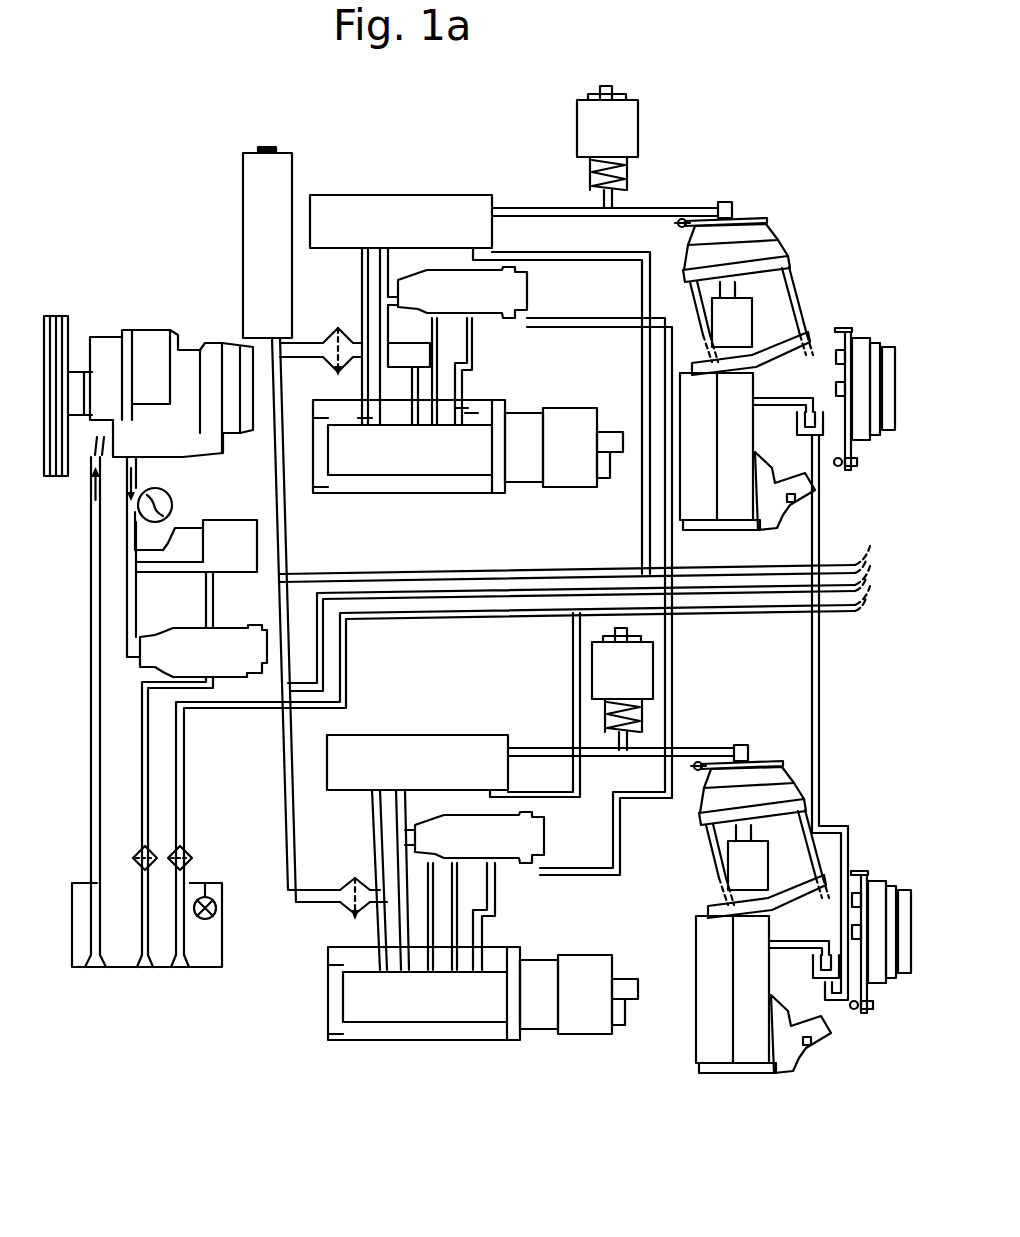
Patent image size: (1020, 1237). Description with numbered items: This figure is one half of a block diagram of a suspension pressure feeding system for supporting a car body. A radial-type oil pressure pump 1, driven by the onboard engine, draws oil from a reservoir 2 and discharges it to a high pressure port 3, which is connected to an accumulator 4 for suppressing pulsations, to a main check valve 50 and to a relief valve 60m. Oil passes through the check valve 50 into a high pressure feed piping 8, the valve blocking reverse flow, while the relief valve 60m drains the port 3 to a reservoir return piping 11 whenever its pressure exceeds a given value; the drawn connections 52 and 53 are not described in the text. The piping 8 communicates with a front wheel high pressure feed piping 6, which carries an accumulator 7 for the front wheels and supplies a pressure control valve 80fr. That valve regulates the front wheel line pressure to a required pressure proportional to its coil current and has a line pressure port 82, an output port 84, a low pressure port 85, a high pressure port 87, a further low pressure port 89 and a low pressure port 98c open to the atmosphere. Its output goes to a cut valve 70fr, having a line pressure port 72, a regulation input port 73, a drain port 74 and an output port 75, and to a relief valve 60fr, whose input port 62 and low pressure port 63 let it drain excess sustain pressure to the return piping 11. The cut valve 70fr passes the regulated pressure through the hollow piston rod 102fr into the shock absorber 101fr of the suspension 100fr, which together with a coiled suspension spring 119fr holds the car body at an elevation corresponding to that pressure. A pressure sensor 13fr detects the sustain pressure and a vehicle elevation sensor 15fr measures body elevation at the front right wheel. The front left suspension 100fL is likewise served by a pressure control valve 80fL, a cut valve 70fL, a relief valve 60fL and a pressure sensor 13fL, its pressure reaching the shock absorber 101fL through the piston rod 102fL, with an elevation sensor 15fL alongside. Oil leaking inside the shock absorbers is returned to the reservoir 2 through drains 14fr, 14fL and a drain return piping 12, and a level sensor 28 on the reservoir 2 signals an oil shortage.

The oil pressure pump 1 is at (154, 325).
The reservoir 2 is at (96, 975).
The high pressure port 3 is at (140, 474).
The accumulator 4 is at (172, 503).
The front wheel high pressure feed piping 6 is at (287, 522).
The accumulator for the front wheels 7 is at (243, 187).
The high pressure feed piping 8 is at (399, 572).
The reservoir return piping 11 is at (603, 590).
The drain return piping 12 is at (554, 628).
The pressure sensor 13fr is at (640, 112).
The pressure sensor 13fL is at (582, 689).
The drain 14fr is at (797, 420).
The drain 14fL is at (804, 973).
The vehicle elevation sensor 15fr is at (875, 331).
The vehicle elevation sensor 15fL is at (887, 965).
The level sensor 28 is at (206, 880).
The main check valve 50 is at (226, 515).
The pipe 52 is at (165, 574).
The pipe 53 is at (204, 580).
The relief valve 60m is at (220, 630).
The relief valve 60fr is at (528, 297).
The relief valve 60fL is at (548, 842).
The input port 62 is at (132, 658).
The low pressure port 63 is at (214, 683).
The cut valve 70fr is at (423, 194).
The cut valve 70fL is at (438, 735).
The line pressure port 72 is at (358, 255).
The regulation input port 73 is at (390, 254).
The drain port 74 is at (490, 248).
The output port 75 is at (504, 208).
The pressure control valve 80fr is at (530, 409).
The pressure control valve 80fL is at (534, 957).
The line pressure port 82 is at (359, 418).
The output port 84 is at (360, 402).
The low pressure port 85 is at (409, 384).
The high pressure port 87 is at (462, 408).
The low pressure port 89 is at (470, 412).
The low pressure port 98c is at (624, 432).
The suspension 100fr is at (756, 209).
The suspension 100fL is at (761, 860).
The shock absorber 101fr is at (764, 311).
The shock absorber 101fL is at (698, 853).
The hollow piston rod 102fr is at (724, 202).
The piston rod 102fL is at (716, 724).
The coiled suspension spring 119fr is at (794, 266).